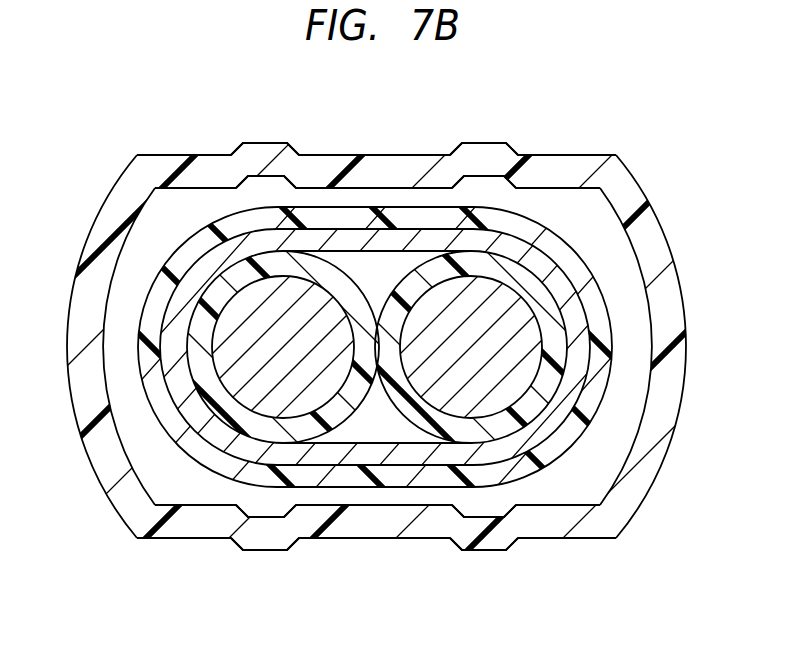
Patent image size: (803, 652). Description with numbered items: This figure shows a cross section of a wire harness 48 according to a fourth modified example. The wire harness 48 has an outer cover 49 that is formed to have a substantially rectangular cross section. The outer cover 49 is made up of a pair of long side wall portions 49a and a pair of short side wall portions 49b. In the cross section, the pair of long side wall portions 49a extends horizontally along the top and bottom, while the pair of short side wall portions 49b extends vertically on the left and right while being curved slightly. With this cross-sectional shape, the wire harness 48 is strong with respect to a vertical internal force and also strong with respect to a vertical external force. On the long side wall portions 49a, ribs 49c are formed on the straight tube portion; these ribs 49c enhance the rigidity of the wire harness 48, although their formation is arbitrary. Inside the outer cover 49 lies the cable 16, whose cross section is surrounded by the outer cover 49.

The shielded cable 16 is at (582, 250).
The wire harness 48 is at (401, 326).
The outer cover 49 is at (401, 326).
The long side wall portions 49a is at (337, 165).
The short side wall portions 49b is at (107, 230).
The rib 49c is at (270, 148).